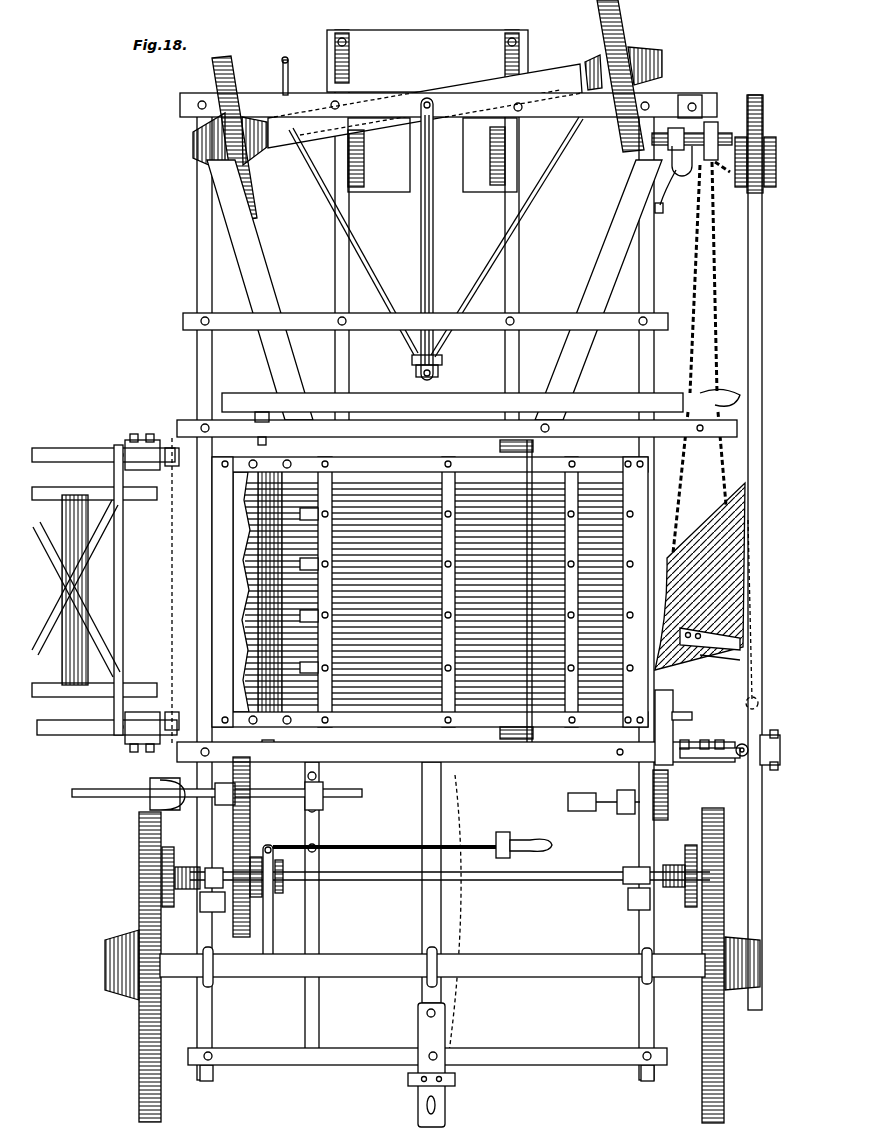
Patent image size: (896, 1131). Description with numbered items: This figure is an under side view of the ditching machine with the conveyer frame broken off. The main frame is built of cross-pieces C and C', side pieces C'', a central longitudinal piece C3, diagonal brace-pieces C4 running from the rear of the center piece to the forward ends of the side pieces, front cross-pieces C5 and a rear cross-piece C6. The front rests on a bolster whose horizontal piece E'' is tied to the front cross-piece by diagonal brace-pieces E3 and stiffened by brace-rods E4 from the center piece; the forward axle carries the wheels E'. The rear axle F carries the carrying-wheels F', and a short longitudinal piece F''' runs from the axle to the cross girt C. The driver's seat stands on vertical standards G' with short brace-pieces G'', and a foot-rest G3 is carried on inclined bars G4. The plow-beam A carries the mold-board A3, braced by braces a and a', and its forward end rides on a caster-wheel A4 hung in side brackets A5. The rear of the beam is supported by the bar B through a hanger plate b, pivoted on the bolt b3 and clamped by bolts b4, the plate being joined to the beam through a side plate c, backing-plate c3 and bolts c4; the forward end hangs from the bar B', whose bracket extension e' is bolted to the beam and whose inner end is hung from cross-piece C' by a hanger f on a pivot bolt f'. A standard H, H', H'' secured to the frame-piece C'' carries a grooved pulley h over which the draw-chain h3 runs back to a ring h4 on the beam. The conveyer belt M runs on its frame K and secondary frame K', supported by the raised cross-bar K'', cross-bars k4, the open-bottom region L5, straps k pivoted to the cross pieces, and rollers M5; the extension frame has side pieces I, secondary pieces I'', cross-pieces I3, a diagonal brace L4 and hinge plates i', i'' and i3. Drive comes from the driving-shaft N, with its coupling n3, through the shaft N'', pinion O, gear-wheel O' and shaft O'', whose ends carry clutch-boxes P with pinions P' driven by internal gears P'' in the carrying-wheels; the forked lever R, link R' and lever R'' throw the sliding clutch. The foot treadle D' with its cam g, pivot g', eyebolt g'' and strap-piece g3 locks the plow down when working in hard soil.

The side pieces C'' is at (427, 588).
The plow-beam A is at (764, 552).
The central longitudinal piece C3 is at (441, 911).
The foot-rest G3 is at (427, 61).
The horizontal piece E'' is at (376, 79).
The bar B is at (425, 431).
The side pieces of secondary frame K' is at (448, 415).
The short brace-pieces G'' is at (379, 155).
The vertical standards G' is at (452, 155).
The diagonal brace-pieces E3 is at (272, 95).
The diagonal brace-rods E4 is at (436, 247).
The front cross-pieces C5 is at (236, 88).
The wheels E' is at (616, 76).
The caster-wheel A4 is at (761, 130).
The side plates or brackets A5 is at (762, 151).
The standard upper portion H is at (692, 155).
The standard lower portion H'' is at (671, 161).
The standard H' is at (665, 191).
The grooved pulley h is at (721, 176).
The draw-chain h3 is at (698, 357).
The side extension plate e' is at (723, 386).
The diagonal brace-pieces C4 is at (434, 290).
The inclined bars G4 is at (433, 256).
The bar B' is at (452, 393).
The cross-piece C' is at (457, 428).
The hanger f is at (270, 405).
The bolt f' is at (239, 391).
The conveyer belt or apron M is at (434, 592).
The raised cross-bar K'' is at (393, 599).
The frame K is at (430, 592).
The screen bars L5 is at (451, 590).
The cross-bars k4 is at (458, 587).
The straps or bars k is at (325, 563).
The side pieces I is at (104, 590).
The secondary side pieces I'' is at (94, 588).
The cross-pieces I3 is at (127, 590).
The rollers M5 is at (172, 590).
The diagonal cross-brace L4 is at (76, 588).
The backing-plate i3 is at (142, 591).
The hinge plates i' is at (155, 591).
The hinge plates i'' is at (173, 554).
The cross-bar C is at (456, 752).
The driving-shaft N is at (217, 782).
The coupling n3 is at (233, 791).
The shaft N'' is at (252, 803).
The gear-pinion O is at (241, 847).
The gear-wheel O' is at (241, 870).
The shaft O'' is at (450, 886).
The forked arm or lever R is at (266, 907).
The rod or link R' is at (390, 835).
The lever R'' is at (524, 837).
The gear wheel or pinion P' is at (434, 863).
The clutch-box P is at (432, 866).
The internal gear P'' is at (436, 927).
The carrying-wheels F' is at (436, 965).
The rear axle F is at (432, 963).
The short longitudinal piece F''' is at (335, 915).
The foot treadle D' is at (604, 814).
The cam or eccentric g is at (626, 794).
The pin or pivot g' is at (609, 781).
The eyebolt g'' is at (632, 818).
The strap-piece g3 is at (672, 787).
The rear cross-piece C6 is at (423, 1065).
The mold-board A3 is at (700, 576).
The brace a is at (710, 659).
The brace a' is at (733, 701).
The plate or casting b is at (699, 744).
The bolt b3 is at (712, 727).
The bolts b4 is at (700, 734).
The plate c is at (748, 742).
The backing-plate c3 is at (779, 750).
The bolts c4 is at (784, 750).
The ring or eye h4 is at (760, 705).